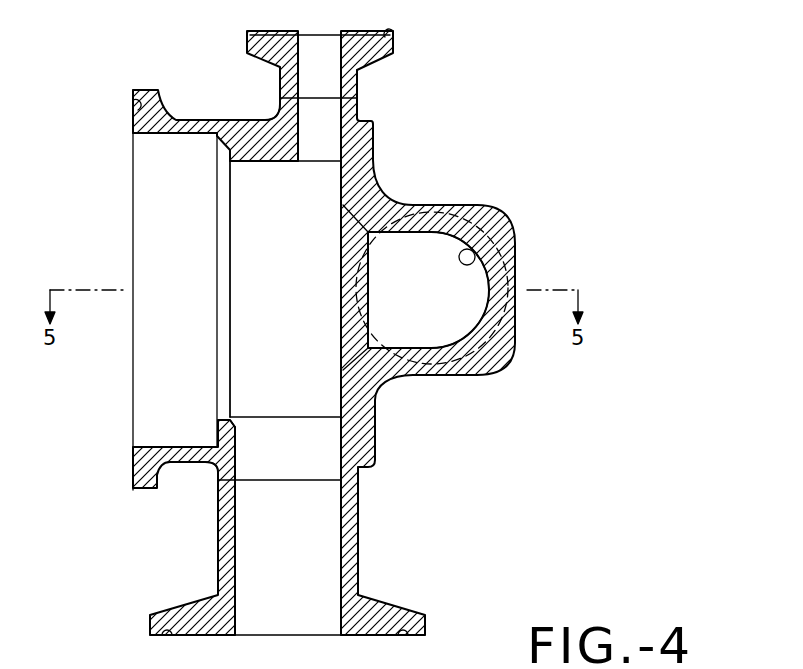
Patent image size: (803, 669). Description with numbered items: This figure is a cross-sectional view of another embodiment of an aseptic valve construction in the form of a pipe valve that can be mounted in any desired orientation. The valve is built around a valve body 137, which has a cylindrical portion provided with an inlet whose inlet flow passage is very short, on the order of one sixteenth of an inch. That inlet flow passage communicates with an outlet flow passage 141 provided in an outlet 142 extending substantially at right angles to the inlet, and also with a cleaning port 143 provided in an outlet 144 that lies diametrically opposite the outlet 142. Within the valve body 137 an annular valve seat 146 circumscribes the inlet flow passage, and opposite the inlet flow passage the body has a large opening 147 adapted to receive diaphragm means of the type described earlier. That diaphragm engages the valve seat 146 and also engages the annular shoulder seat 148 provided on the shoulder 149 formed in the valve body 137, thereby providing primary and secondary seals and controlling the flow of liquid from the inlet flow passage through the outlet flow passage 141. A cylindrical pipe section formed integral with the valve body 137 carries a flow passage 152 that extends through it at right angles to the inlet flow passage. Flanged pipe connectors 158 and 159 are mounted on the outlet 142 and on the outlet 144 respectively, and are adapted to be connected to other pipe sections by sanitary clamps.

The valve body 137 is at (396, 425).
The outlet flow passage 141 is at (237, 448).
The outlet 142 is at (217, 467).
The cleaning port 143 is at (298, 63).
The outlet 144 is at (282, 107).
The annular valve seat 146 is at (362, 358).
The large opening 147 is at (165, 134).
The annular shoulder seat 148 is at (220, 433).
The shoulder 149 is at (230, 150).
The flow passage 152 is at (474, 254).
The flanged pipe connector 158 is at (360, 540).
The flanged pipe connector 159 is at (357, 79).